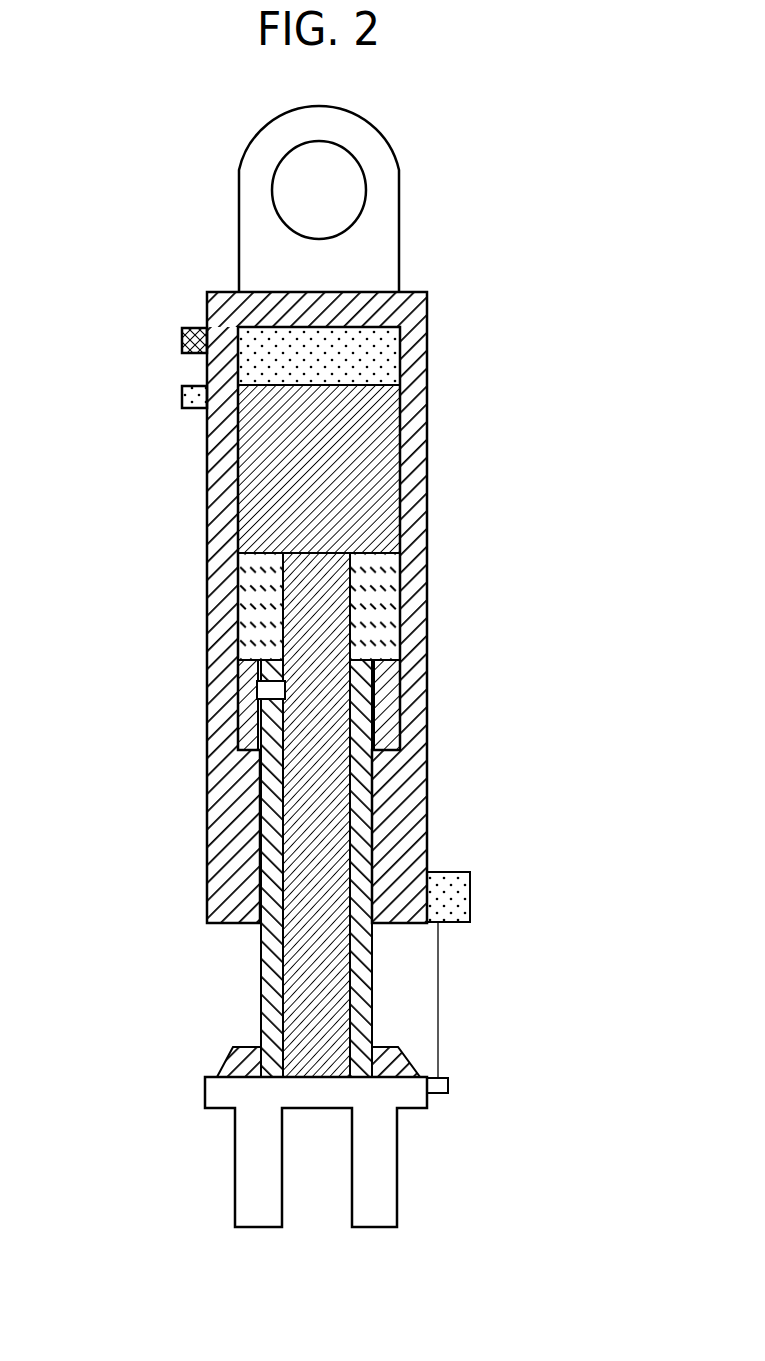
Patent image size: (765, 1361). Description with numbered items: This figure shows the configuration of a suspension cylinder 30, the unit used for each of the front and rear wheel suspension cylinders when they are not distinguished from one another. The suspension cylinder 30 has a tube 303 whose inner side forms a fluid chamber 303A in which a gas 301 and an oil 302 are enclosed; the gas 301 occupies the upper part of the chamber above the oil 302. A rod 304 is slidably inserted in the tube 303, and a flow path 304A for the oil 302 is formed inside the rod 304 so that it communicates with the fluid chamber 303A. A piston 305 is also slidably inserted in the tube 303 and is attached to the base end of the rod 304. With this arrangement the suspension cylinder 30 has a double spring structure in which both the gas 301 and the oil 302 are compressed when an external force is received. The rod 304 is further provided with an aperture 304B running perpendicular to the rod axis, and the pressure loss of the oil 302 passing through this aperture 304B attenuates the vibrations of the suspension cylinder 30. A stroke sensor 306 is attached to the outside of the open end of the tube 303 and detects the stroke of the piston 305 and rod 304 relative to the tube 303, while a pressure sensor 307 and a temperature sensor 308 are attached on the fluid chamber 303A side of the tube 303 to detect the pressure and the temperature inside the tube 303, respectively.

The suspension cylinder 30 is at (387, 142).
The gas 301 is at (370, 345).
The oil 302 is at (380, 478).
The tube 303 is at (429, 597).
The fluid chamber 303A is at (402, 372).
The rod 304 is at (235, 890).
The flow path 304A is at (283, 1018).
The aperture 304B is at (268, 690).
The piston 305 is at (247, 608).
The stroke sensor 306 is at (462, 902).
The pressure sensor 307 is at (182, 330).
The temperature sensor 308 is at (182, 392).